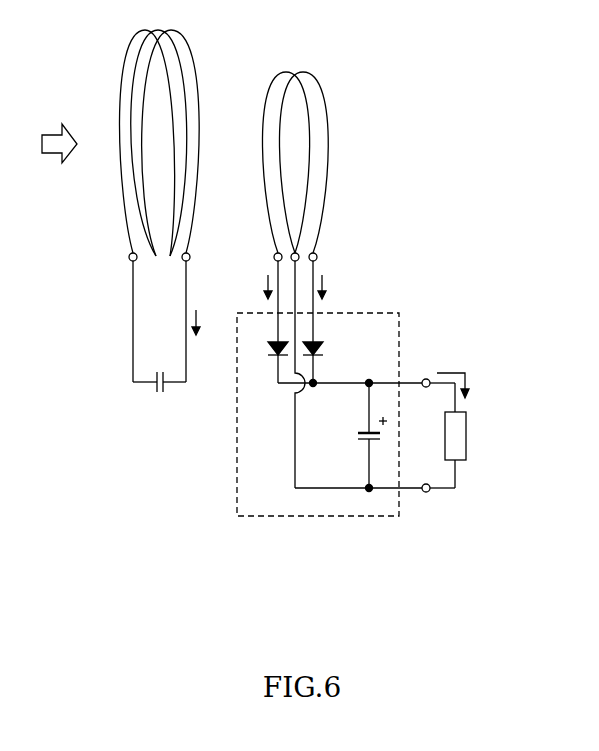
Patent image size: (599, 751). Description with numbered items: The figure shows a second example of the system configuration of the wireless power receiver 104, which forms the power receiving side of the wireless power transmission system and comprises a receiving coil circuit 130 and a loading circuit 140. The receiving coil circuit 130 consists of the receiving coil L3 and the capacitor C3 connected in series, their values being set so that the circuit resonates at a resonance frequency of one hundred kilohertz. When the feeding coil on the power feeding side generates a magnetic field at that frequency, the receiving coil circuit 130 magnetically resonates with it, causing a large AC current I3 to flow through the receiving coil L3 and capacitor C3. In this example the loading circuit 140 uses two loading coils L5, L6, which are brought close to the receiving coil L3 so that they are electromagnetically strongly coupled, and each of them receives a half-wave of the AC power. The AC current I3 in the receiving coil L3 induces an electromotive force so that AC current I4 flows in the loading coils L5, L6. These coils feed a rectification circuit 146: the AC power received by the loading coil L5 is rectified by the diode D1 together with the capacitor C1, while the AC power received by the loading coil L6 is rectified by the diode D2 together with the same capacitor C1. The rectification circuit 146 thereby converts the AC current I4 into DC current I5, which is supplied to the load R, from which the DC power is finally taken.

The wireless power receiver 104 is at (258, 321).
The receiving coil circuit 130 is at (167, 292).
The loading circuit 140 is at (352, 312).
The rectification circuit 146 is at (372, 311).
The receiving coil L3 is at (159, 134).
The capacitor C3 is at (159, 339).
The AC current I3 is at (204, 322).
The loading coil L5 is at (285, 154).
The loading coil L6 is at (303, 154).
The AC current I4 is at (295, 287).
The diode D1 is at (265, 362).
The diode D2 is at (327, 364).
The capacitor C1 is at (362, 436).
The load R is at (446, 435).
The DC current I5 is at (453, 375).